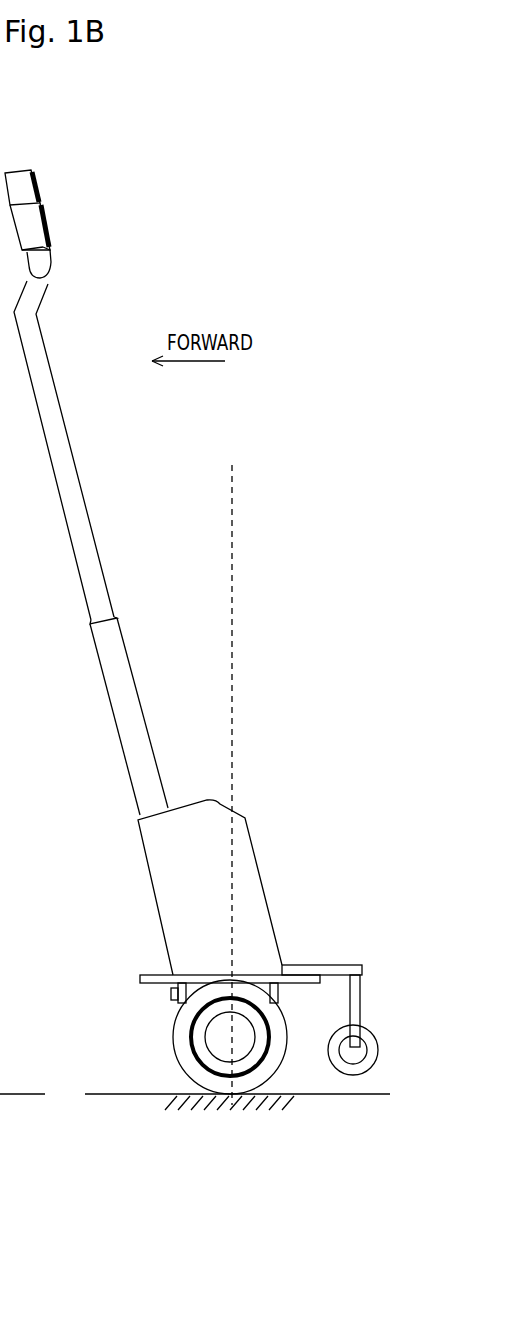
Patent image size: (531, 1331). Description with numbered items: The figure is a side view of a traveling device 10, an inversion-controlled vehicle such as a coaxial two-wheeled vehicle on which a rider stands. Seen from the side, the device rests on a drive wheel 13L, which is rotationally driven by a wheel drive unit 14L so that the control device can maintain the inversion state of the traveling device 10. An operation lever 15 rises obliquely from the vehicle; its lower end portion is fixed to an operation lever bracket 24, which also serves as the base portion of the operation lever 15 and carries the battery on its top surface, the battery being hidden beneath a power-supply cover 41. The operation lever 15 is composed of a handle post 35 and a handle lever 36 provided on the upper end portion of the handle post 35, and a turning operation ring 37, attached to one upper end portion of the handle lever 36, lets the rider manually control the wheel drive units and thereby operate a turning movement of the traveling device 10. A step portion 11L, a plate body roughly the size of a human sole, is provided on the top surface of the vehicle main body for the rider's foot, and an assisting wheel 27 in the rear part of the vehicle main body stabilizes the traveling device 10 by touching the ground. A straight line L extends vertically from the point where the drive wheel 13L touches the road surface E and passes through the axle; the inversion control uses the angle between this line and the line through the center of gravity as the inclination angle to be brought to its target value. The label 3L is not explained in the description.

The traveling device 10 is at (246, 598).
The operation lever 15 is at (77, 410).
The handle post 35 is at (134, 687).
The handle lever 36 is at (50, 241).
The turning operation ring 37 is at (38, 184).
The power-supply cover 41 is at (243, 843).
The step portion 11L is at (303, 978).
The drive wheel 13L is at (231, 1097).
The wheel drive unit 14L is at (21, 1022).
The left side 3L is at (13, 982).
The operation lever bracket 24 is at (173, 1003).
The assisting wheel 27 is at (353, 1098).
The straight line L is at (233, 708).
The road surface E is at (17, 1094).